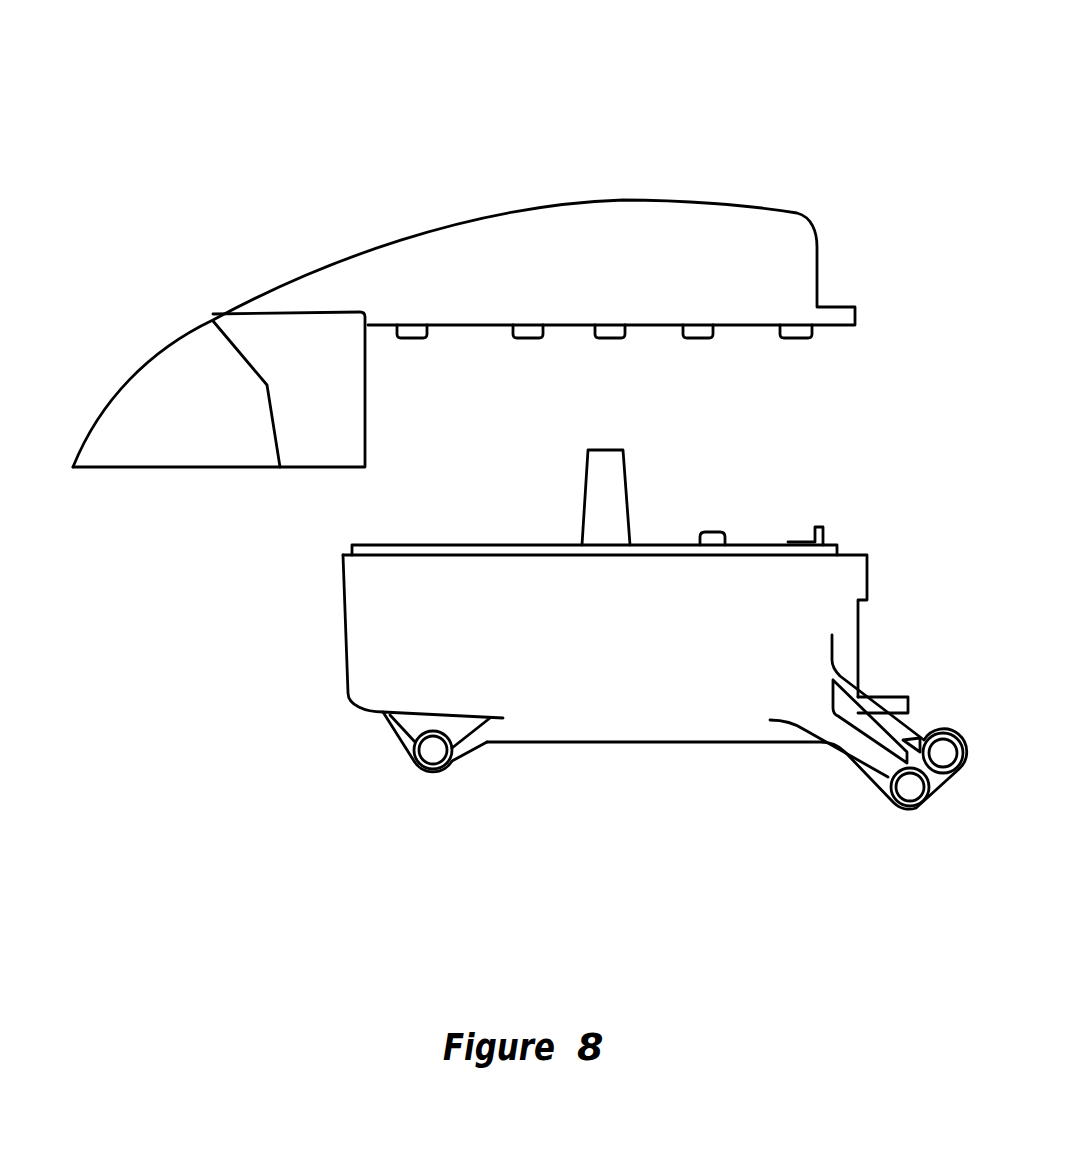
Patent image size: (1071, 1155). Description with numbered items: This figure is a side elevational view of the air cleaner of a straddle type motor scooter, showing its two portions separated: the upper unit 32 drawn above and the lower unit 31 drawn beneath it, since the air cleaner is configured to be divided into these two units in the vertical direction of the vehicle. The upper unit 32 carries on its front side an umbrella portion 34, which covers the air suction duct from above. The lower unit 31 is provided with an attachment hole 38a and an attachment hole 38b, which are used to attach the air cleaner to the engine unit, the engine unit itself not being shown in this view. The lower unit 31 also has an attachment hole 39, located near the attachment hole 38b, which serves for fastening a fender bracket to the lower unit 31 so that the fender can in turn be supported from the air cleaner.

The lower unit 31 is at (632, 761).
The upper unit 32 is at (600, 184).
The umbrella portion 34 is at (175, 375).
The attachment hole 38a is at (433, 752).
The attachment hole 38b is at (910, 787).
The attachment hole 39 is at (943, 753).